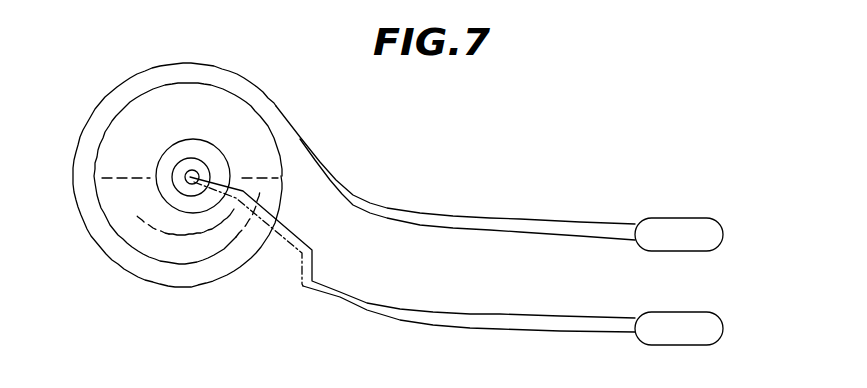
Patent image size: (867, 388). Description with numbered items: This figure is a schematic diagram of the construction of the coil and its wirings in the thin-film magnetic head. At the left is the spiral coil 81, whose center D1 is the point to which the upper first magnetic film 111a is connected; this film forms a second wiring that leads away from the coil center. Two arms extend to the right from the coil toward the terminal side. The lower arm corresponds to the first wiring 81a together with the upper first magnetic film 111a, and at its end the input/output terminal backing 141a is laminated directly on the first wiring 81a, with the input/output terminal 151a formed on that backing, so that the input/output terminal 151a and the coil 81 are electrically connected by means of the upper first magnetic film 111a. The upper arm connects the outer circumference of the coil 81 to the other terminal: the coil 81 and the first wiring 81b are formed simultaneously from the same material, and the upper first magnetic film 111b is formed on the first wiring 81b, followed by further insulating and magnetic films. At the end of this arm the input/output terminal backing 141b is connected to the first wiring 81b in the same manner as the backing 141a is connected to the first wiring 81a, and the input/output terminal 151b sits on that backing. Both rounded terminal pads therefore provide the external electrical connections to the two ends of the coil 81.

The coil 81 is at (258, 83).
The center of the coil D1 is at (192, 176).
The first wiring 81a is at (412, 276).
The upper first magnetic film 111a is at (523, 331).
The first wiring 81b is at (455, 173).
The upper first magnetic film 111b is at (482, 228).
The input/output terminal 151a is at (675, 348).
The input/output terminal backing 141a is at (671, 345).
The input/output terminal 151b is at (674, 206).
The input/output terminal backing 141b is at (680, 218).